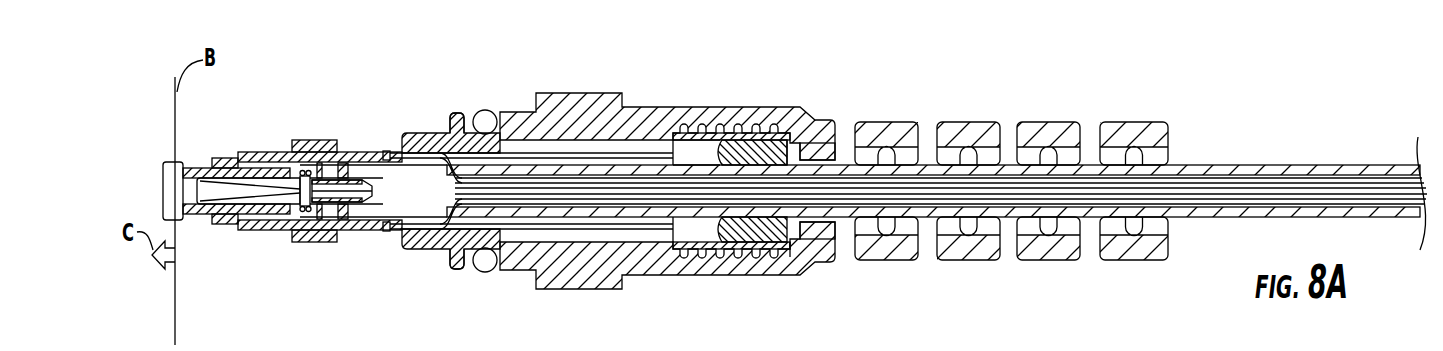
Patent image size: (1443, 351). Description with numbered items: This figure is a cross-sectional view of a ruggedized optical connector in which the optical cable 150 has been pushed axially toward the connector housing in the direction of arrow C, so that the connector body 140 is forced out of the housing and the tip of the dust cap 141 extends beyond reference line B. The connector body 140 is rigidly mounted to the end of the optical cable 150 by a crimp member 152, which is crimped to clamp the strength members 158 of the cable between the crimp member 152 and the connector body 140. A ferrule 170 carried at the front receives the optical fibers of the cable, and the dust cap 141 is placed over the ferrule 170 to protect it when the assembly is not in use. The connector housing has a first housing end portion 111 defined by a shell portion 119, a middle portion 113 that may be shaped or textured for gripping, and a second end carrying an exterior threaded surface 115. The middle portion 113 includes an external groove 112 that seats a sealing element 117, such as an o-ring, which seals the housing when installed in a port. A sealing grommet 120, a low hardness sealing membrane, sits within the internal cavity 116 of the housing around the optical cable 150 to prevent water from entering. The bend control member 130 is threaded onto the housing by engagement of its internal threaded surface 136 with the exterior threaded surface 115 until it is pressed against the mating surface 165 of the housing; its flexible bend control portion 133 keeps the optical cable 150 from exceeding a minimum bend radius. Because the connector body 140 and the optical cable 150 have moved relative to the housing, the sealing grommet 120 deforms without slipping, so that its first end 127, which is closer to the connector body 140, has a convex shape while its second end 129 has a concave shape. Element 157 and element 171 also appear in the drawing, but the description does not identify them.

The first housing end portion 111 is at (314, 133).
The external groove 112 is at (467, 104).
The middle portion 113 is at (607, 86).
The exterior threaded surface 115 is at (764, 151).
The internal cavity 116 is at (690, 157).
The sealing element 117 is at (489, 111).
The shell portion 119 is at (277, 152).
The sealing grommet 120 is at (790, 140).
The first end 127 is at (706, 229).
The second end 129 is at (788, 243).
The bend control member 130 is at (870, 86).
The flexible bend control portion 133 is at (1020, 110).
The internal threaded surface 136 is at (780, 151).
The connector body 140 is at (226, 151).
The dust cap 141 is at (166, 146).
The optical cable 150 is at (1248, 135).
The crimp member 152 is at (432, 133).
The slot 157 is at (707, 157).
The strength members 158 is at (442, 165).
The mating surface 165 is at (680, 150).
The ferrule 170 is at (223, 204).
The ball 171 is at (301, 228).